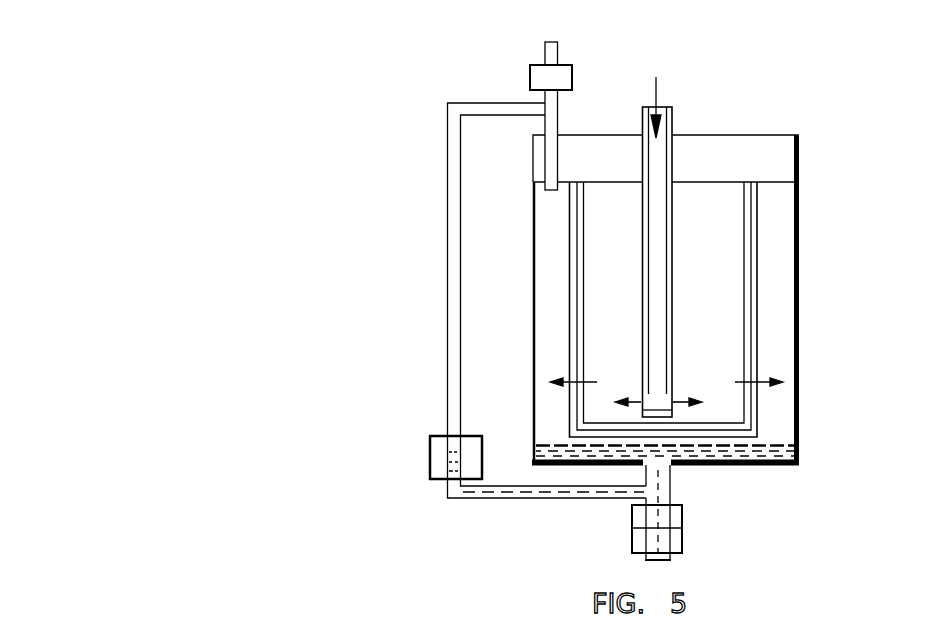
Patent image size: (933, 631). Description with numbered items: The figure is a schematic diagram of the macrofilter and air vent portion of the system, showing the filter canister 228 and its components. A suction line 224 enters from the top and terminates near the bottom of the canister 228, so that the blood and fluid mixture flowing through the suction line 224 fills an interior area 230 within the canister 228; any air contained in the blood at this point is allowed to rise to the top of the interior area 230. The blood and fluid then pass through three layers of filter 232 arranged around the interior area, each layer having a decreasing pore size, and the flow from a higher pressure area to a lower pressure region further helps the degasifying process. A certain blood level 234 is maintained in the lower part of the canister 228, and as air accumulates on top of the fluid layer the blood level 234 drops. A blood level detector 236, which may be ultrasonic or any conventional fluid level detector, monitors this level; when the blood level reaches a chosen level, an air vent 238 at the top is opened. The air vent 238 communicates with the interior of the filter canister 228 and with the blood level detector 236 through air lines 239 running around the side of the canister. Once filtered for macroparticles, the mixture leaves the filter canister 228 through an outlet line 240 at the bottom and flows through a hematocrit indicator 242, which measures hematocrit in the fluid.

The suction line 224 is at (672, 362).
The filter canister 228 is at (799, 246).
The interior area 230 is at (722, 296).
The filter 232 is at (577, 252).
The blood level 234 is at (777, 447).
The blood level detector 236 is at (438, 459).
The air vent 238 is at (530, 72).
The air lines 239 is at (555, 127).
The outlet line 240 is at (672, 487).
The hematocrit indicator 242 is at (682, 542).